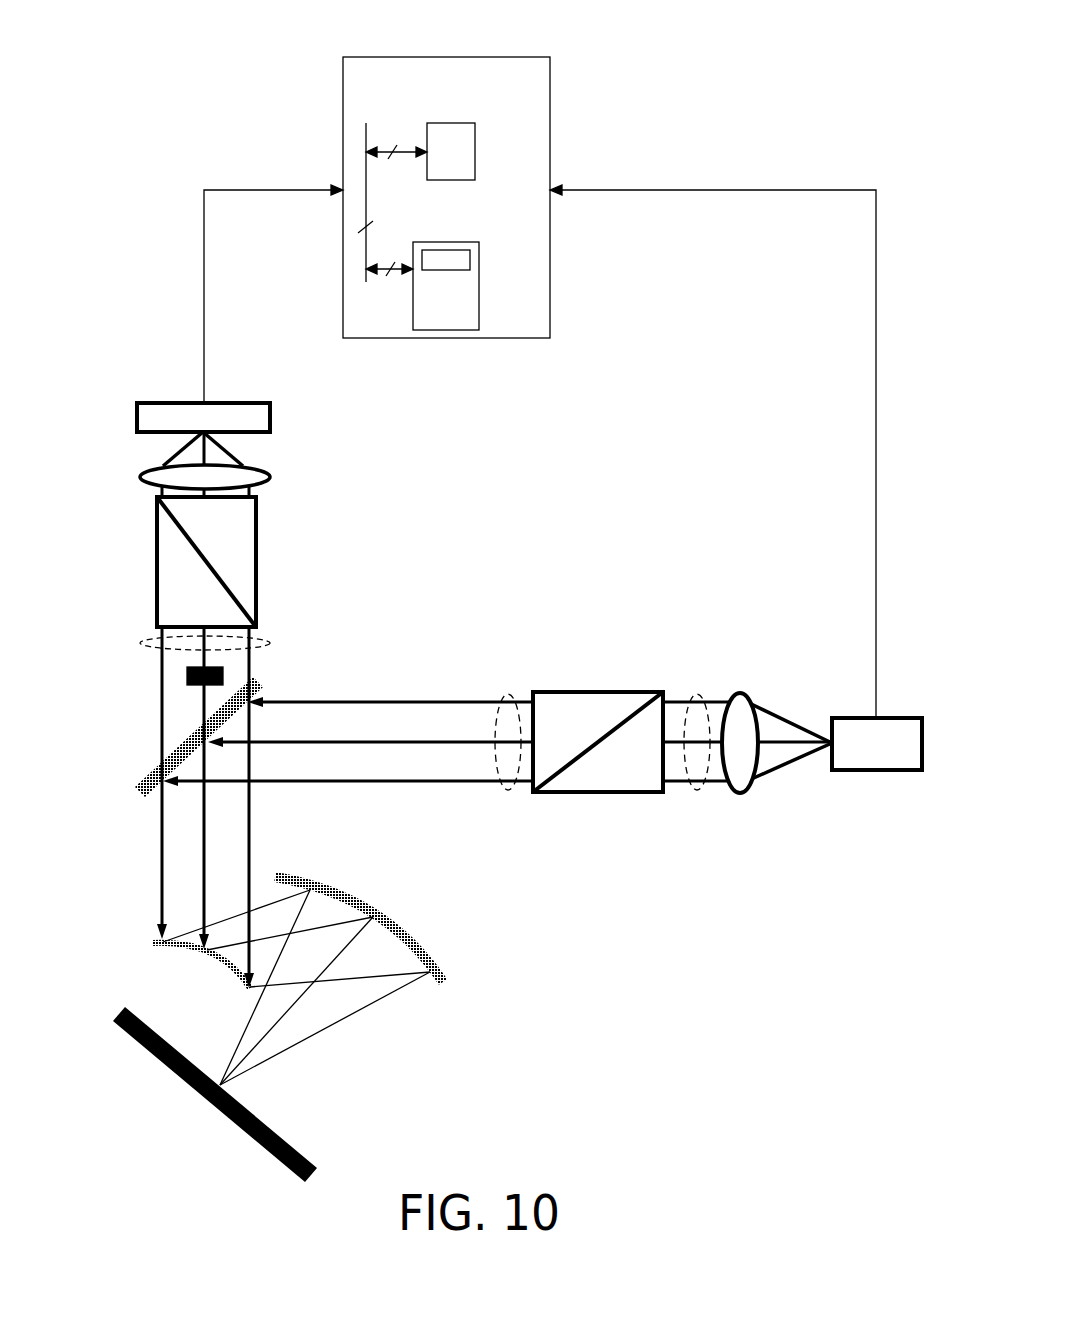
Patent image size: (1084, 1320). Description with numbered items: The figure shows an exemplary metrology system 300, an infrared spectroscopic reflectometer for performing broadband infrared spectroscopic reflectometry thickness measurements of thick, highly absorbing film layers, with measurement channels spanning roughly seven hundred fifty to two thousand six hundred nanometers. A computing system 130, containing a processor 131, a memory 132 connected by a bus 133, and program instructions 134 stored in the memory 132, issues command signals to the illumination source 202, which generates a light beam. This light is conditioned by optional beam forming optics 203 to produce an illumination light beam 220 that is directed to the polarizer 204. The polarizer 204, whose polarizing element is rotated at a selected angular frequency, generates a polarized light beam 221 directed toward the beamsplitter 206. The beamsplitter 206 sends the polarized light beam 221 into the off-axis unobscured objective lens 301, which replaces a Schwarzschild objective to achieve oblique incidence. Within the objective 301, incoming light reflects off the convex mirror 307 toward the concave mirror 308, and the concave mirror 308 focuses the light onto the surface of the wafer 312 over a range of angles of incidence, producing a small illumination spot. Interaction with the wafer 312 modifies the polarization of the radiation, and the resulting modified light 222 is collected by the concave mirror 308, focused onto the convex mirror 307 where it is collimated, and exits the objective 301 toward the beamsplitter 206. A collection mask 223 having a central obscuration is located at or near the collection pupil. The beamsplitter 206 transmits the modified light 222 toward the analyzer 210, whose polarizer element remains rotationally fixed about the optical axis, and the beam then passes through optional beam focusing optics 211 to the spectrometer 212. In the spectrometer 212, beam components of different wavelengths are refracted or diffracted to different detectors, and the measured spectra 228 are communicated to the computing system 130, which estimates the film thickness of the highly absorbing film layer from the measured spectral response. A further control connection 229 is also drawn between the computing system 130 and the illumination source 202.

The metrology system 300 is at (838, 103).
The computing system 130 is at (446, 197).
The processor 131 is at (476, 152).
The memory 132 is at (413, 318).
The bus 133 is at (367, 195).
The program instructions 134 is at (471, 258).
The measured spectra 228 is at (278, 180).
The light source control connection 229 is at (612, 177).
The illumination source 202 is at (877, 744).
The beam forming optics 203 is at (748, 791).
The polarizer 204 is at (598, 742).
The beamsplitter 206 is at (133, 785).
The analyzer 210 is at (206, 562).
The beam focusing optics 211 is at (140, 477).
The spectrometer 212 is at (203, 434).
The illumination light beam 220 is at (700, 791).
The polarized light beam 221 is at (510, 791).
The modified light 222 is at (137, 647).
The mask 223 is at (187, 675).
The off-axis unobscured objective lens 301 is at (316, 995).
The convex mirror 307 is at (193, 955).
The concave mirror 308 is at (337, 887).
The wafer 312 is at (230, 1094).